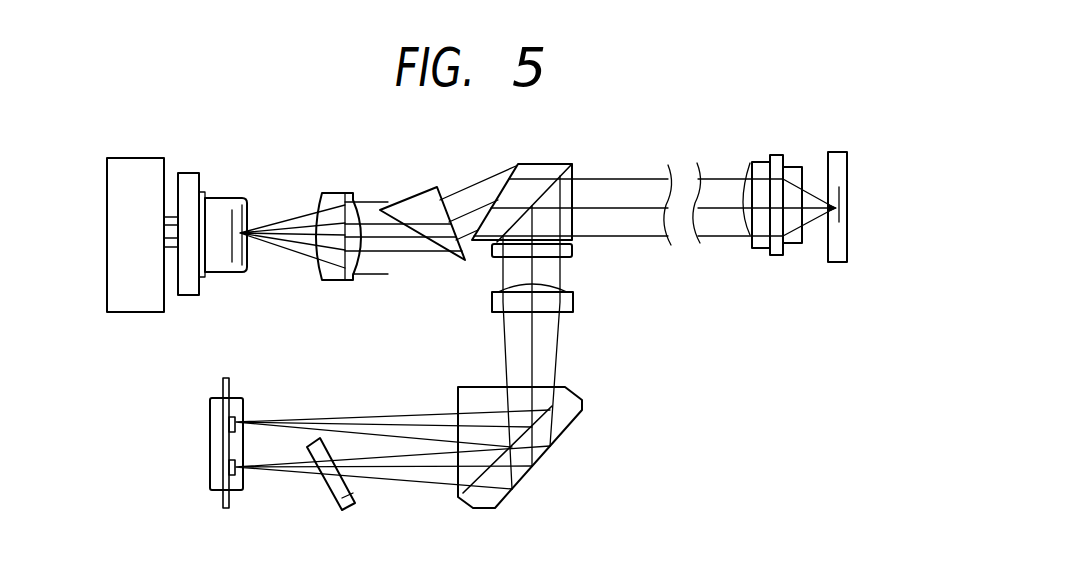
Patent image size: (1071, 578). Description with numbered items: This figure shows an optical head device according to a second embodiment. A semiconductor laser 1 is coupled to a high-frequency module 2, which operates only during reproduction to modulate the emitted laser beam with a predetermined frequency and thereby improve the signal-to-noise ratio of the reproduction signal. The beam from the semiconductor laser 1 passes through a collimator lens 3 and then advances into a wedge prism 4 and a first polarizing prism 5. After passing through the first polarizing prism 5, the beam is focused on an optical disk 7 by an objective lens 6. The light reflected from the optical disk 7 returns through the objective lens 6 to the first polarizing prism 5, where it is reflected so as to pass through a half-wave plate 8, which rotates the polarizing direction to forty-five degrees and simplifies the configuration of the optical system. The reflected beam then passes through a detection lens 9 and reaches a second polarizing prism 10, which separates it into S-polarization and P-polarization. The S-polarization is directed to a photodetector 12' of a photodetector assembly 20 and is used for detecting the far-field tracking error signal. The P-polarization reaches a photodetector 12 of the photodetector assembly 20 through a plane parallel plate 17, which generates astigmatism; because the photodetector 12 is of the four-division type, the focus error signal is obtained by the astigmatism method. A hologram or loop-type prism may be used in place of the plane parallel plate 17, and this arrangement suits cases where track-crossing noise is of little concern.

The semiconductor laser 1 is at (195, 183).
The high-frequency module 2 is at (130, 157).
The collimator lens 3 is at (330, 193).
The wedge prism 4 is at (440, 200).
The first polarizing prism 5 is at (557, 166).
The objective lens 6 is at (760, 165).
The optical disk 7 is at (833, 247).
The half-wave plate 8 is at (573, 252).
The detection lens 9 is at (572, 302).
The second polarizing prism 10 is at (493, 498).
The photodetector 12 is at (265, 491).
The photodetector 12' is at (268, 410).
The plane parallel plate 17 is at (355, 504).
The photodetector assembly 20 is at (218, 485).